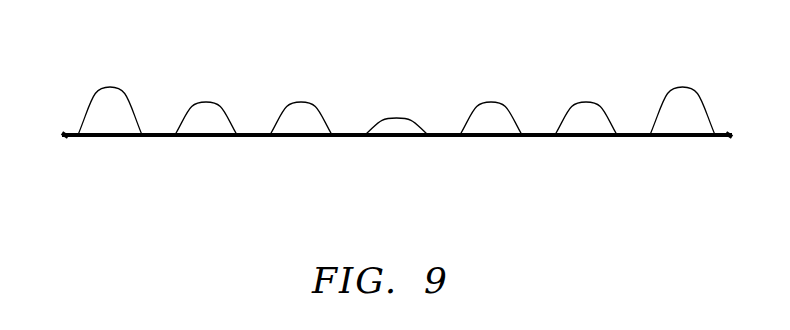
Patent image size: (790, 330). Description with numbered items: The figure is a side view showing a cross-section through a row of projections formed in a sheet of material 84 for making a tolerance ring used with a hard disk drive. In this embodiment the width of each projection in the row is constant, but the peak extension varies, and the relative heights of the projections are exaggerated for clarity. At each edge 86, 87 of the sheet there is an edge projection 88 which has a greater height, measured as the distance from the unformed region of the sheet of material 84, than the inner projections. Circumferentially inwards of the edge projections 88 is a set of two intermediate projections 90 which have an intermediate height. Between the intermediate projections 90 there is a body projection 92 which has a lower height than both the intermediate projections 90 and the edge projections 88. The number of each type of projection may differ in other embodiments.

The sheet of material 84 is at (541, 138).
The edge 86 is at (727, 138).
The edge 87 is at (65, 138).
The edge projection 88 is at (110, 86).
The intermediate projections 90 is at (320, 95).
The body projection 92 is at (398, 116).